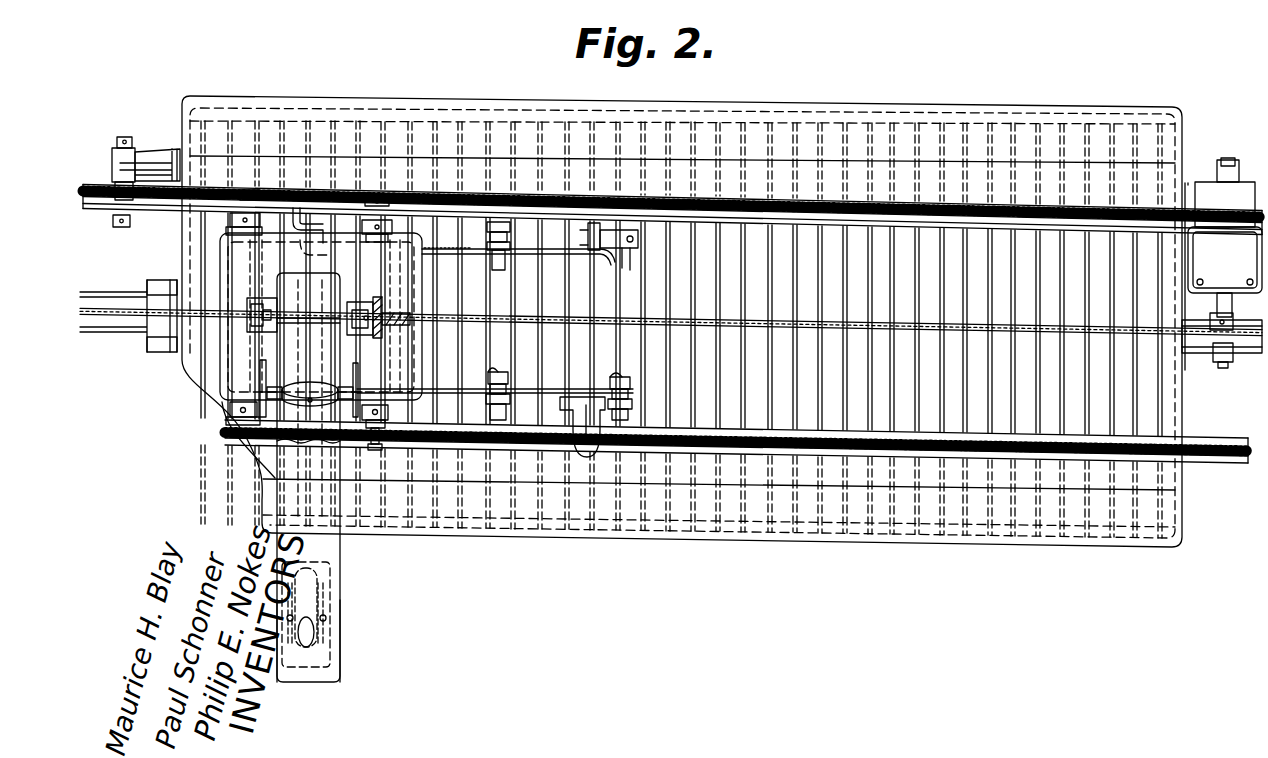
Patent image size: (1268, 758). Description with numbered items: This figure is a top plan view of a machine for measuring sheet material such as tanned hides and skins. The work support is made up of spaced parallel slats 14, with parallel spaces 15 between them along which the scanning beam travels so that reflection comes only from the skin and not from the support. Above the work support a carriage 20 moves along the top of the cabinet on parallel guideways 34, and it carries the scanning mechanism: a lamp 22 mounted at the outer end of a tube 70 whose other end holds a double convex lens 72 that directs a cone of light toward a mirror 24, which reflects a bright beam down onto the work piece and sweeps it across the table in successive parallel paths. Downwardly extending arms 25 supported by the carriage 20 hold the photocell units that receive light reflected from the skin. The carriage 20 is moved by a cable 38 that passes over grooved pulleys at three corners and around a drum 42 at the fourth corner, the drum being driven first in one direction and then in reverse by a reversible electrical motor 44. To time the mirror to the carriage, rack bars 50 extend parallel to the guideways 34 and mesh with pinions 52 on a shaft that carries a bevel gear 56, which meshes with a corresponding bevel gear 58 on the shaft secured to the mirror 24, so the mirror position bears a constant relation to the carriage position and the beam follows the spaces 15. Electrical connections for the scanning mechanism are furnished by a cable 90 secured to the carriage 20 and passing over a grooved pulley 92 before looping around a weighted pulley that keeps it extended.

The slats 14 is at (838, 264).
The spaces 15 is at (792, 287).
The carriage 20 is at (415, 284).
The lamp 22 is at (318, 576).
The mirror 24 is at (288, 283).
The arms 25 is at (553, 256).
The guideways 34 is at (670, 426).
The cable 38 is at (132, 322).
The drum 42 is at (1242, 352).
The reversible electrical motor 44 is at (1212, 240).
The rack bars 50 is at (706, 432).
The pinions 52 is at (380, 446).
The bevel gear 56 is at (396, 327).
The bevel gear 58 is at (379, 297).
The tube 70 is at (346, 584).
The double convex lens 72 is at (330, 380).
The cable 90 is at (178, 213).
The grooved pulley 92 is at (112, 212).